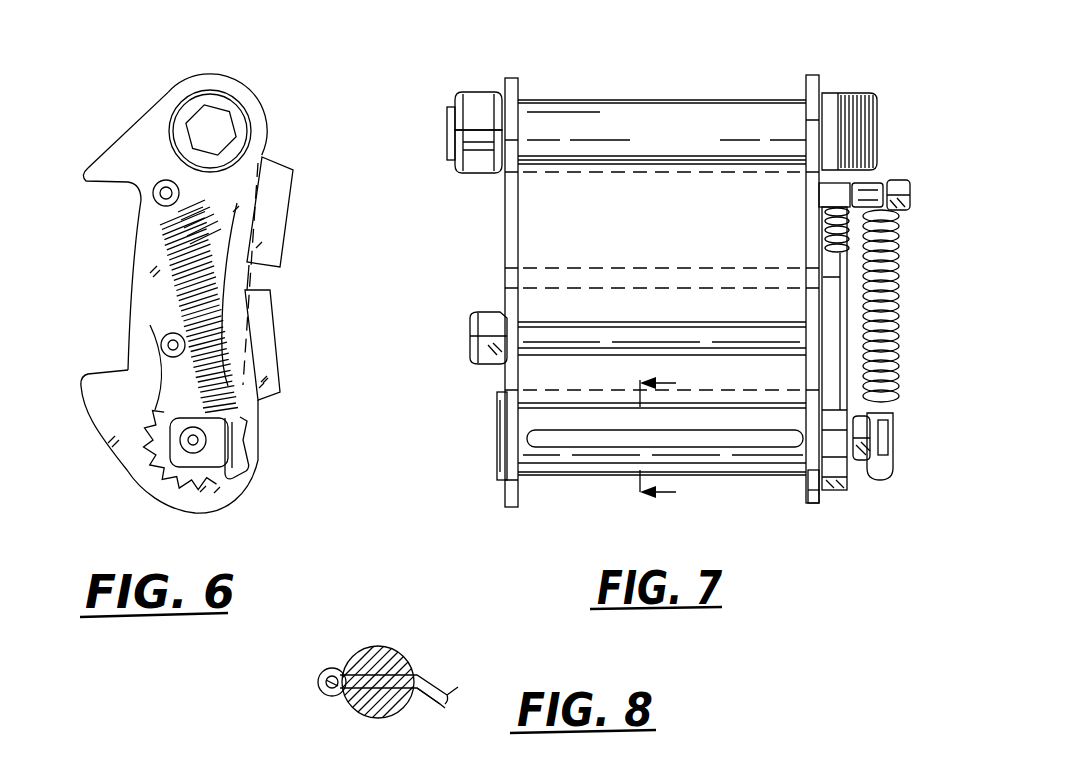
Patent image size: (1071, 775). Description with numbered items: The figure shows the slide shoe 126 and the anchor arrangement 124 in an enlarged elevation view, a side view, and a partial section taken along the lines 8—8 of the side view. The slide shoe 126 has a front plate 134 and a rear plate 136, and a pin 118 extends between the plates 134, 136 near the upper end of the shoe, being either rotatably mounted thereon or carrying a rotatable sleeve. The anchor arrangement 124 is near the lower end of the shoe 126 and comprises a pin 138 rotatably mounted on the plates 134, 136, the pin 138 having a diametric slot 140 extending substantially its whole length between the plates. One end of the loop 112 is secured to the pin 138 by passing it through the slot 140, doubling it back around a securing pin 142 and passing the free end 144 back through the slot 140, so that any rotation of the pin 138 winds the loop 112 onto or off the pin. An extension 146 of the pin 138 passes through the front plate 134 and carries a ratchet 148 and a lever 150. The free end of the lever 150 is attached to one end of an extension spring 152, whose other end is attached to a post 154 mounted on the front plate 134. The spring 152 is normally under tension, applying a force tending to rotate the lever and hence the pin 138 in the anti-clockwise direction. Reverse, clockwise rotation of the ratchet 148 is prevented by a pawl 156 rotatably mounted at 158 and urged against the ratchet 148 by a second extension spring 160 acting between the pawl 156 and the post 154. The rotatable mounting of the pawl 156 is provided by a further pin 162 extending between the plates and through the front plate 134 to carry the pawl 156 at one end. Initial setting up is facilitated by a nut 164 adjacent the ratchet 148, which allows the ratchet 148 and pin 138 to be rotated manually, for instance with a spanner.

In FIG. 8, the loop 112 is at (438, 685).
In FIG. 6, the pin 118 is at (220, 128).
In FIG. 7, the pin 118 is at (684, 115).
In FIG. 6, the anchor arrangement 124 is at (280, 478).
In FIG. 7, the anchor arrangement 124 is at (792, 530).
In FIG. 6, the slide shoe 126 is at (116, 242).
In FIG. 7, the slide shoe 126 is at (494, 250).
In FIG. 6, the front plate 134 is at (174, 293).
In FIG. 7, the front plate 134 is at (812, 249).
In FIG. 7, the rear plate 136 is at (510, 205).
In FIG. 7, the pin 138 is at (747, 477).
In FIG. 8, the pin 138 is at (377, 650).
In FIG. 7, the diametric slot 140 is at (723, 442).
In FIG. 8, the diametric slot 140 is at (360, 713).
In FIG. 8, the securing pin 142 is at (327, 692).
In FIG. 8, the free end 144 is at (423, 693).
In FIG. 7, the extension 146 is at (828, 512).
In FIG. 6, the ratchet 148 is at (160, 463).
In FIG. 7, the ratchet 148 is at (835, 442).
In FIG. 6, the lever 150 is at (207, 465).
In FIG. 7, the lever 150 is at (873, 481).
In FIG. 6, the extension spring 152 is at (249, 363).
In FIG. 7, the extension spring 152 is at (863, 357).
In FIG. 6, the post 154 is at (160, 183).
In FIG. 7, the post 154 is at (897, 183).
In FIG. 6, the pawl 156 is at (157, 367).
In FIG. 7, the pawl 156 is at (832, 307).
In FIG. 6, the rotatable mounting 158 is at (161, 334).
In FIG. 6, the second extension spring 160 is at (204, 208).
In FIG. 7, the second extension spring 160 is at (825, 225).
In FIG. 7, the further pin 162 is at (640, 332).
In FIG. 7, the nut 164 is at (862, 463).
In FIG. 7, the section line 8— 8 is at (645, 438).